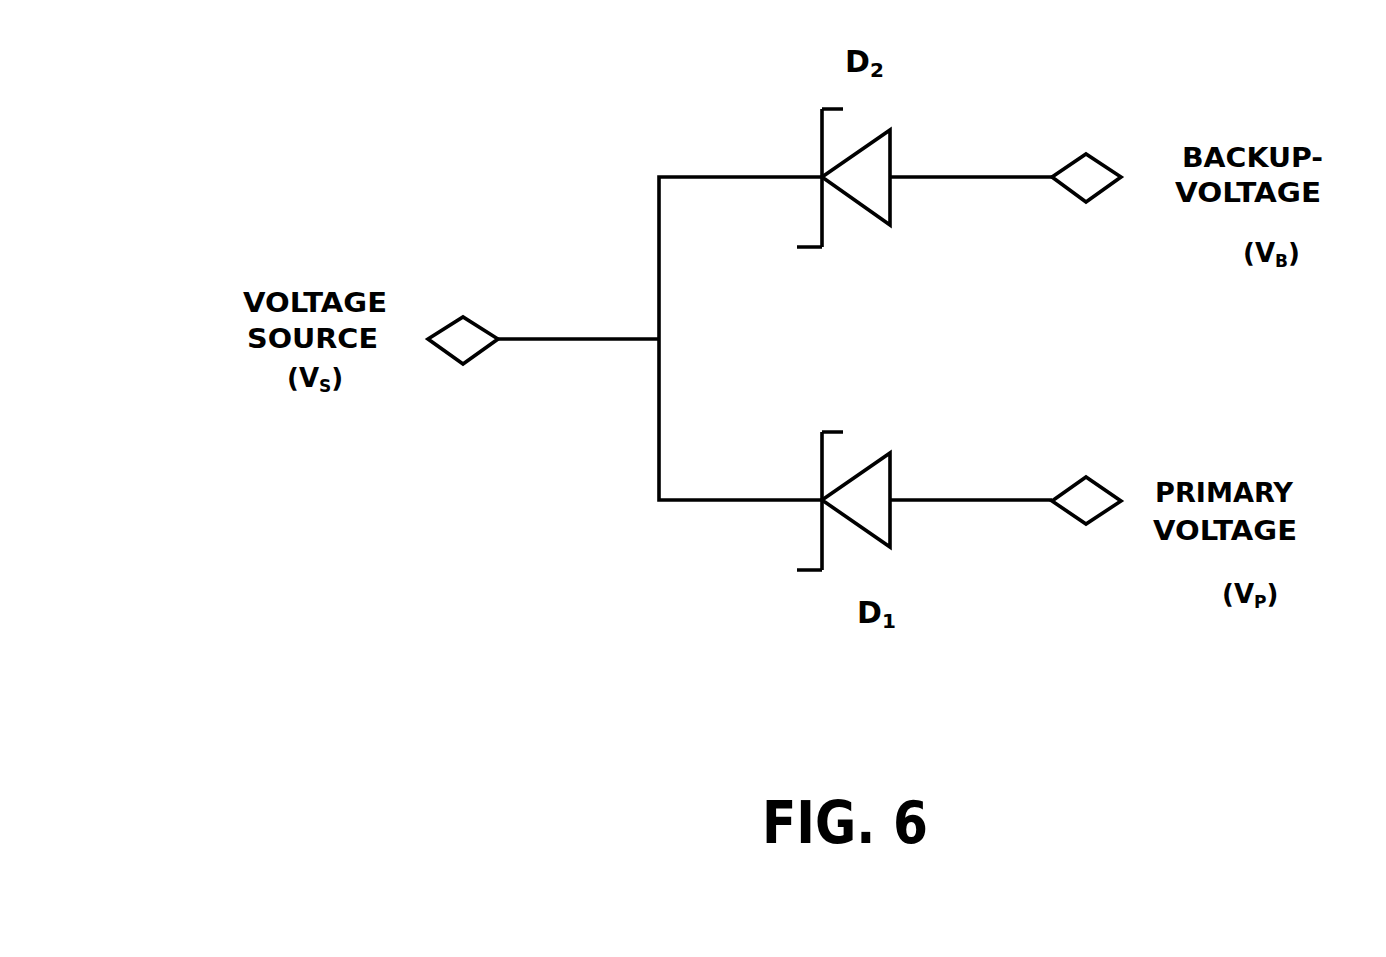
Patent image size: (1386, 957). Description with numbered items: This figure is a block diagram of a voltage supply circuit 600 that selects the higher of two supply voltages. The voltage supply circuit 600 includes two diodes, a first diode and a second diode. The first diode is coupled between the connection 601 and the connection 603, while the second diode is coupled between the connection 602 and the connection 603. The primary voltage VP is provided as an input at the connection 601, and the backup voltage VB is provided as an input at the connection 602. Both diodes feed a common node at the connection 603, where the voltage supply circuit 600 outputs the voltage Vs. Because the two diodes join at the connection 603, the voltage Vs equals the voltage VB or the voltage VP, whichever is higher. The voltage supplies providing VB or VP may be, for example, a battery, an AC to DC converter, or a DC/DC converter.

The voltage supply circuit 600 is at (391, 118).
The connection 601 is at (1086, 477).
The connection 602 is at (1086, 154).
The connection 603 is at (463, 317).